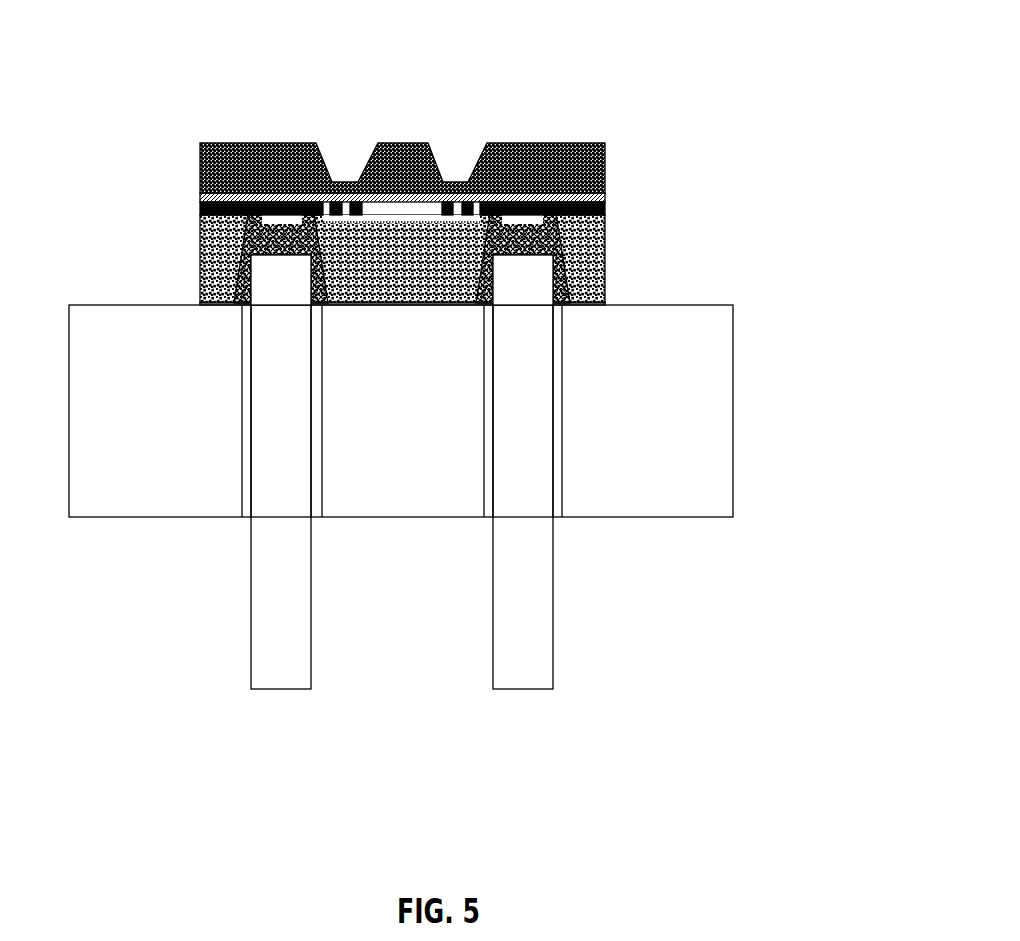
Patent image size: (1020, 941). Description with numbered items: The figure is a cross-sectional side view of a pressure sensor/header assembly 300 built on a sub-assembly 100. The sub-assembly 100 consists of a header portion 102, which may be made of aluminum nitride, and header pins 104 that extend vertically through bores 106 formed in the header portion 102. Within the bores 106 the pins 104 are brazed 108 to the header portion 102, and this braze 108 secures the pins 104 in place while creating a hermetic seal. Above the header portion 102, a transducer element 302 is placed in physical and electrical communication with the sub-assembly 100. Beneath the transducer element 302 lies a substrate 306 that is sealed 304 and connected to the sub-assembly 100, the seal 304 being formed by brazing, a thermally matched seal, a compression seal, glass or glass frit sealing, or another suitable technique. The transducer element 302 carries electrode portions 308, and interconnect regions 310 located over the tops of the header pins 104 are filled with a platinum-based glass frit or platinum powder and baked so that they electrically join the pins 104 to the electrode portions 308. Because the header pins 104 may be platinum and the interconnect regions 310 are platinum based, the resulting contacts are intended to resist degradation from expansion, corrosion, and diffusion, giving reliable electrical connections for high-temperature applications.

The sub-assembly 100 is at (741, 268).
The header portion 102 is at (423, 410).
The header pins 104 is at (489, 564).
The bores 106 is at (238, 494).
The braze 108 is at (322, 523).
The pressure sensor/header assembly 300 is at (430, 58).
The transducer element 302 is at (612, 170).
The seal 304 is at (612, 297).
The substrate 306 is at (208, 296).
The electrode portions 308 is at (293, 218).
The interconnect regions 310 is at (555, 240).